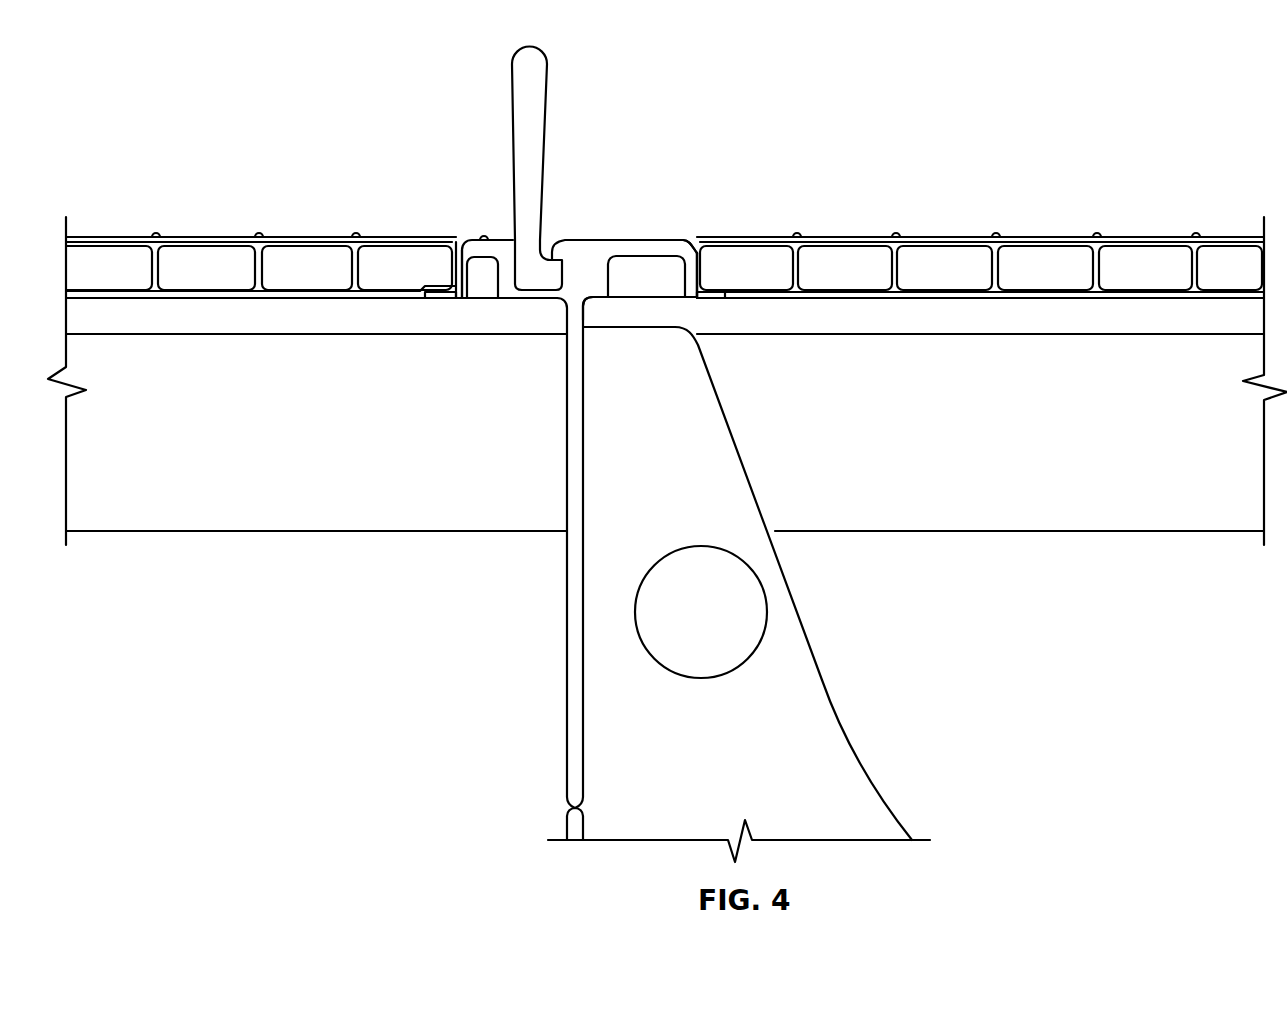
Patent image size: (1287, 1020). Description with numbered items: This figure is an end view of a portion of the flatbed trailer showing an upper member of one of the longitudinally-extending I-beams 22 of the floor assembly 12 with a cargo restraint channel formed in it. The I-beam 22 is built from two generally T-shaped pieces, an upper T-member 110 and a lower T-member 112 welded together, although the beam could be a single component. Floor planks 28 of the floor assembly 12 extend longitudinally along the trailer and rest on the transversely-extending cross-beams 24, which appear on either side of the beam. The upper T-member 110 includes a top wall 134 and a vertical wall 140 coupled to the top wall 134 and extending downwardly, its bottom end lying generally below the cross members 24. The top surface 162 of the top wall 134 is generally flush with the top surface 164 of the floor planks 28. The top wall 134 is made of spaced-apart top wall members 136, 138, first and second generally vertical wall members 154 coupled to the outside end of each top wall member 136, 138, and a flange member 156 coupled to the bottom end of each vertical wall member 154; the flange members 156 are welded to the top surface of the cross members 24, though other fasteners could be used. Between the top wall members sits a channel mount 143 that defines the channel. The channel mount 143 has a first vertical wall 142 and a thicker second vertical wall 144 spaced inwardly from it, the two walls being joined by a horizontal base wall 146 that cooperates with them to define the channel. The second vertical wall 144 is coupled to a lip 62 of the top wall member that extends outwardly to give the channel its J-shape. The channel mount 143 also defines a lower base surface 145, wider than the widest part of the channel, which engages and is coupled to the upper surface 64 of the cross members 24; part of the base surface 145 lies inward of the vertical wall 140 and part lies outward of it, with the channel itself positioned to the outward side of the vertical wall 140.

The floor assembly 12 is at (1003, 203).
The I-beam 22 is at (693, 579).
The cross-beam 24 is at (1126, 518).
The floor plank 28 is at (1235, 262).
The lip 62 is at (562, 240).
The upper surface 64 is at (108, 295).
The upper T-member 110 is at (573, 590).
The lower T-member 112 is at (566, 825).
The top wall 134 is at (697, 221).
The top wall member 136 is at (472, 240).
The top wall member 138 is at (622, 243).
The vertical wall 140 is at (575, 657).
The first vertical wall 142 is at (500, 278).
The channel mount 143 is at (538, 313).
The second vertical wall 144 is at (597, 278).
The base surface 145 is at (517, 300).
The horizontal base wall 146 is at (585, 300).
The vertical wall member 154 is at (458, 268).
The flange member 156 is at (440, 298).
The top surface 162 is at (665, 237).
The top surface 164 is at (1145, 238).